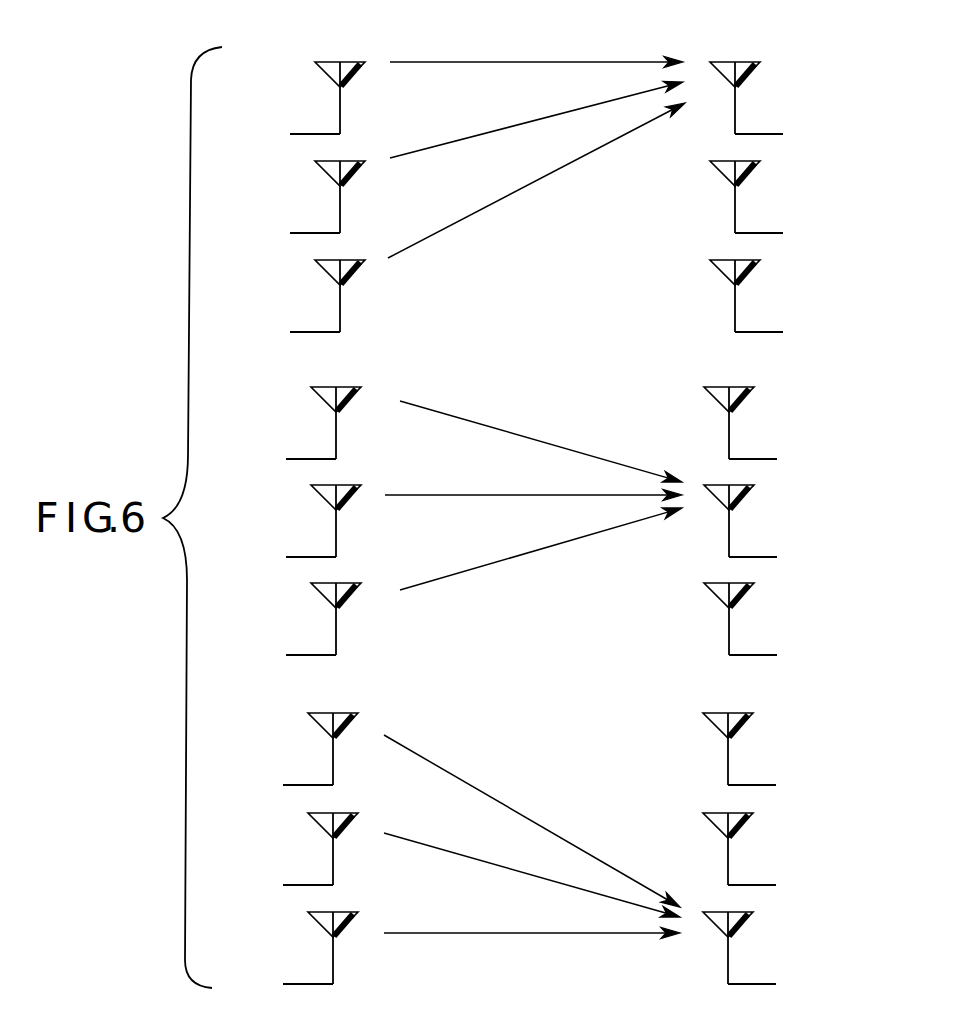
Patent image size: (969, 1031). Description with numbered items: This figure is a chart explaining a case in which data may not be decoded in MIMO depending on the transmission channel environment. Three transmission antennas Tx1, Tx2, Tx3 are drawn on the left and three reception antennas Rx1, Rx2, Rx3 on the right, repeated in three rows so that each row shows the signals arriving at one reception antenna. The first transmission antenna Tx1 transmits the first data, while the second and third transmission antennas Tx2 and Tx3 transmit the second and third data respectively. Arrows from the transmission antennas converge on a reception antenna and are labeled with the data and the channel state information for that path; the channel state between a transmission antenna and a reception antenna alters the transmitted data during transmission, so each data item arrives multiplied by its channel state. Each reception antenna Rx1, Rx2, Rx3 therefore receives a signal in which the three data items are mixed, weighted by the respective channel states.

The transmission antenna Tx1 is at (302, 422).
The transmission antenna Tx2 is at (302, 521).
The transmission antenna Tx3 is at (302, 620).
The reception antenna Rx1 is at (758, 422).
The reception antenna Rx2 is at (758, 521).
The reception antenna Rx3 is at (758, 620).